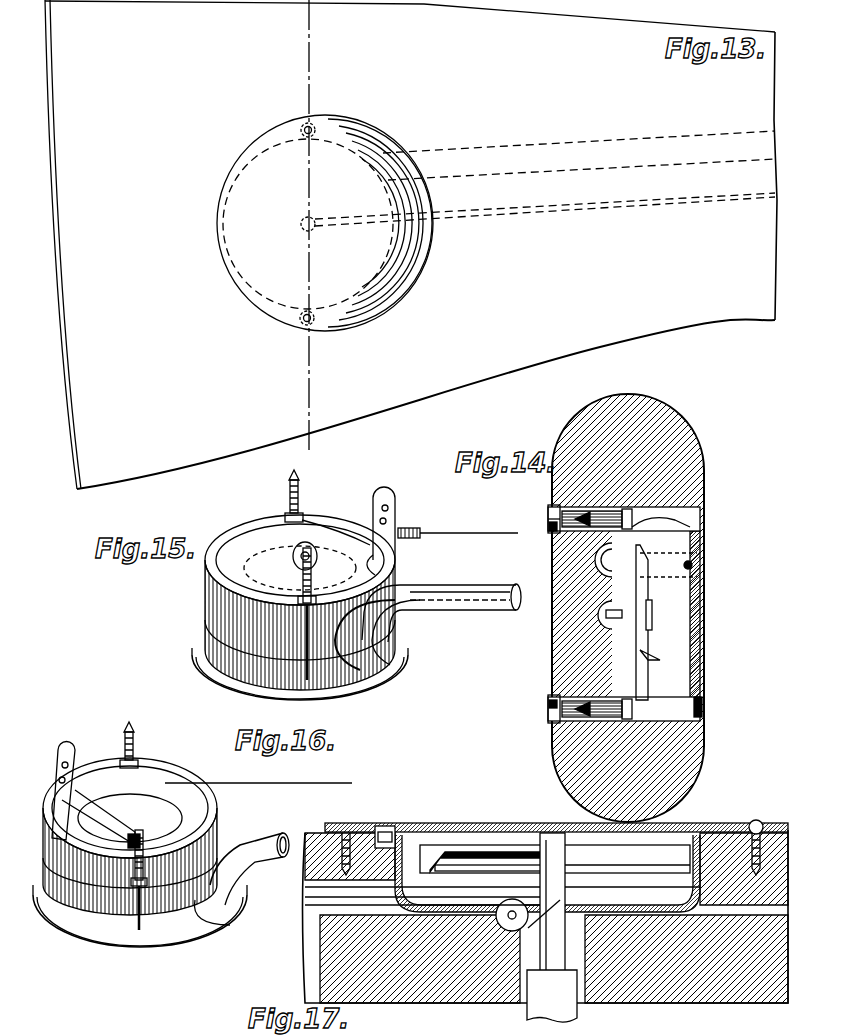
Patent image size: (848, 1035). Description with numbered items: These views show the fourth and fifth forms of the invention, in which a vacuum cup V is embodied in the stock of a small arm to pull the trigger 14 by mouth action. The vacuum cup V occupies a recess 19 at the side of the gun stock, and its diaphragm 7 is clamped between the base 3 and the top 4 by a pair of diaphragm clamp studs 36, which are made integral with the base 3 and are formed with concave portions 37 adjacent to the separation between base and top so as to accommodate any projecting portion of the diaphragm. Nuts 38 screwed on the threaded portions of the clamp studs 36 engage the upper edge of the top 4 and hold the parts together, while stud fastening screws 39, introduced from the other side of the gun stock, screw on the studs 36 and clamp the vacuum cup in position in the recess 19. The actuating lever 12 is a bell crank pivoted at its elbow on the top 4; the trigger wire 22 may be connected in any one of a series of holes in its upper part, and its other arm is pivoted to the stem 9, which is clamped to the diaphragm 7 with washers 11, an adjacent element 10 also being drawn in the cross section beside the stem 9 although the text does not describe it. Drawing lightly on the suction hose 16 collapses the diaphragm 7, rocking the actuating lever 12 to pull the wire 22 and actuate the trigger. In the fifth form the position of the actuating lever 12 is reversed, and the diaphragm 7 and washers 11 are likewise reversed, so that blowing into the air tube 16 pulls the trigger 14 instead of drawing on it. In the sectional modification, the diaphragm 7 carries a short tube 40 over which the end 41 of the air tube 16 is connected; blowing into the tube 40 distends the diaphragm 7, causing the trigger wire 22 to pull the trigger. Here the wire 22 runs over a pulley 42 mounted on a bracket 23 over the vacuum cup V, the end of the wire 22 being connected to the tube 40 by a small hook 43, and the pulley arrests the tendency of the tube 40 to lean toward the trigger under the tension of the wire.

In FIG. 13, the base 3 is at (230, 268).
In FIG. 14, the base 3 is at (700, 548).
In FIG. 15, the base 3 is at (230, 632).
In FIG. 16, the base 3 is at (60, 866).
In FIG. 17, the base 3 is at (420, 835).
In FIG. 14, the top 4 is at (700, 478).
In FIG. 15, the top 4 is at (220, 605).
In FIG. 16, the top 4 is at (95, 770).
In FIG. 17, the top 4 is at (408, 875).
In FIG. 14, the diaphragm 7 is at (648, 560).
In FIG. 15, the diaphragm 7 is at (250, 576).
In FIG. 16, the diaphragm 7 is at (162, 800).
In FIG. 17, the diaphragm 7 is at (555, 854).
In FIG. 14, the stem 9 is at (610, 618).
In FIG. 15, the stem 9 is at (288, 574).
In FIG. 16, the stem 9 is at (137, 828).
In FIG. 14, the spring 10 is at (652, 612).
In FIG. 14, the washers 11 is at (650, 648).
In FIG. 15, the washers 11 is at (291, 575).
In FIG. 16, the washers 11 is at (160, 830).
In FIG. 13, the actuating lever 12 is at (318, 220).
In FIG. 15, the actuating lever 12 is at (390, 515).
In FIG. 16, the actuating lever 12 is at (58, 760).
In FIG. 13, the trigger 14 is at (309, 230).
In FIG. 13, the suction hose 16 is at (470, 150).
In FIG. 14, the suction hose 16 is at (608, 565).
In FIG. 15, the suction hose 16 is at (470, 598).
In FIG. 16, the suction hose 16 is at (258, 840).
In FIG. 14, the recess 19 is at (700, 502).
In FIG. 13, the trigger wire 22 is at (545, 206).
In FIG. 15, the trigger wire 22 is at (458, 524).
In FIG. 16, the trigger wire 22 is at (258, 771).
In FIG. 17, the trigger wire 22 is at (306, 905).
In FIG. 17, the bracket 23 is at (546, 913).
In FIG. 14, the diaphragm clamp studs 36 is at (690, 522).
In FIG. 15, the diaphragm clamp studs 36 is at (298, 492).
In FIG. 16, the diaphragm clamp studs 36 is at (133, 730).
In FIG. 14, the concave portions 37 is at (702, 712).
In FIG. 14, the nuts 38 is at (560, 728).
In FIG. 15, the nuts 38 is at (336, 523).
In FIG. 16, the nuts 38 is at (138, 762).
In FIG. 14, the stud fastening screws 39 is at (552, 530).
In FIG. 17, the short tube 40 is at (546, 850).
In FIG. 17, the end of the air tube 41 is at (560, 1005).
In FIG. 17, the pulley 42 is at (508, 900).
In FIG. 17, the hook 43 is at (561, 904).
In FIG. 13, the vacuum cup V is at (245, 207).
In FIG. 14, the vacuum cup V is at (714, 594).
In FIG. 15, the vacuum cup V is at (418, 561).
In FIG. 17, the vacuum cup V is at (450, 843).